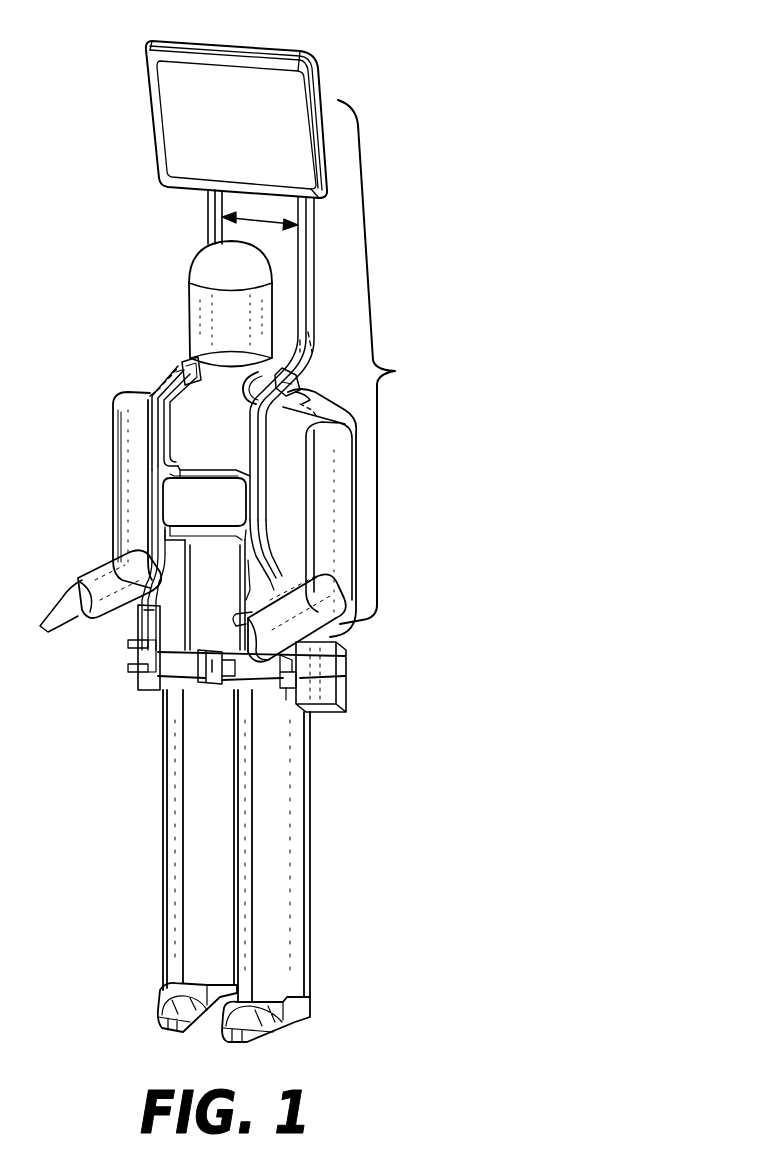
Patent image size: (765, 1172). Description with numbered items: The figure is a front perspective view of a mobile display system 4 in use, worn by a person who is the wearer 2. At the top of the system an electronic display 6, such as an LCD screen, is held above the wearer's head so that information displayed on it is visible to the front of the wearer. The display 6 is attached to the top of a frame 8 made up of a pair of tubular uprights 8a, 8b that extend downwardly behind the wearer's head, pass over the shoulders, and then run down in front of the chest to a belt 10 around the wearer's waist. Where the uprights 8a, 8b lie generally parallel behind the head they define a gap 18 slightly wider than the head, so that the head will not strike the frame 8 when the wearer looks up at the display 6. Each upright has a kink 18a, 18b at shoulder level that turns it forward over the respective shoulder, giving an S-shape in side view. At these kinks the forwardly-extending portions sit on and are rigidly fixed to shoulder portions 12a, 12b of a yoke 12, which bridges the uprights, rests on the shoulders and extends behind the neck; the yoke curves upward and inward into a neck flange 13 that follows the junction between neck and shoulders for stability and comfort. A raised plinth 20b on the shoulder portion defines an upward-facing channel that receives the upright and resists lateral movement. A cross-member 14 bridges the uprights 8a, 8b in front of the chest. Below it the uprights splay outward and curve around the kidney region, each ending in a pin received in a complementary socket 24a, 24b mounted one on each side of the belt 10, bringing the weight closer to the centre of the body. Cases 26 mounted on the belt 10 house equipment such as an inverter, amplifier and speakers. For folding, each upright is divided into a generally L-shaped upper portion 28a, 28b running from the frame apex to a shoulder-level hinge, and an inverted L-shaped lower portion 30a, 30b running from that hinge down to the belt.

The wearer 2 is at (162, 270).
The mobile display system 4 is at (378, 106).
The electronic display 6 is at (168, 82).
The frame 8 is at (400, 372).
The tubular upright 8a is at (176, 384).
The tubular upright 8b is at (262, 440).
The belt 10 is at (186, 664).
The yoke 12 is at (282, 366).
The shoulder portion 12a is at (160, 396).
The shoulder portion 12b is at (292, 412).
The neck flange 13 is at (288, 334).
The cross-member 14 is at (180, 496).
The gap 18 is at (268, 232).
The kink 18a is at (182, 360).
The kink 18b is at (303, 352).
The raised plinth 20b is at (300, 398).
The socket 24a is at (150, 664).
The socket 24b is at (340, 692).
The case 26 is at (136, 622).
The upper portion 28a is at (218, 210).
The upper portion 28b is at (318, 278).
The lower portion 30a is at (158, 440).
The lower portion 30b is at (255, 452).